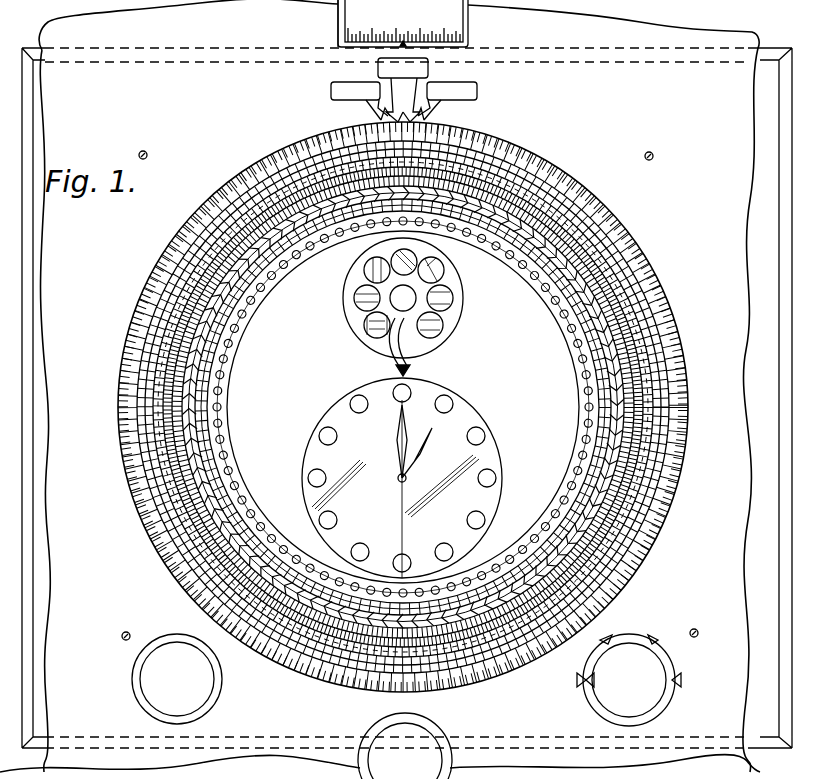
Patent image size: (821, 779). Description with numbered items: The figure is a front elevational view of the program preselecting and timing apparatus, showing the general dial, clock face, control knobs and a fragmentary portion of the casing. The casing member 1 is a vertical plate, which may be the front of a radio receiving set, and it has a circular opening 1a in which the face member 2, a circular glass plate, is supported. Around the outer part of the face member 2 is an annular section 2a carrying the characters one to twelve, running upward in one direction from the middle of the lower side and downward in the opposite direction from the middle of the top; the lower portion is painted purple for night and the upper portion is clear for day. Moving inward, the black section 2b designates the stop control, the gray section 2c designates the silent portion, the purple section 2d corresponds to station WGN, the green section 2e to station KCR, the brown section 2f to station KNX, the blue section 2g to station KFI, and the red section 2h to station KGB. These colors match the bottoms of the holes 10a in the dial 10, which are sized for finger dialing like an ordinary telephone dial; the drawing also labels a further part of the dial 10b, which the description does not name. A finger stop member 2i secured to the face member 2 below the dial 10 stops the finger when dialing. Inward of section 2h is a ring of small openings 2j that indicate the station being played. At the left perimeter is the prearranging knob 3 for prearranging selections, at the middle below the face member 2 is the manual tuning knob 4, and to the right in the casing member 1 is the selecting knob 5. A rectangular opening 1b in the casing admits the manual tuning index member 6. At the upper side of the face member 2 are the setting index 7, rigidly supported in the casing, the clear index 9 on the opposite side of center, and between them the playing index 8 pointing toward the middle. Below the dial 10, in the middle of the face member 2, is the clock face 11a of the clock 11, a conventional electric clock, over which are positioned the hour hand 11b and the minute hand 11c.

The casing member 1 is at (396, 386).
The circular opening 1a is at (647, 265).
The rectangular opening 1b is at (338, 14).
The face member 2 is at (365, 578).
The annular section 2a is at (655, 294).
The black painted section 2b is at (660, 316).
The gray painted section 2c is at (665, 350).
The purple painted section 2d is at (668, 389).
The green painted section 2e is at (632, 430).
The brown painted section 2f is at (624, 447).
The blue painted section 2g is at (612, 466).
The red painted section 2h is at (590, 480).
The finger stop member 2i is at (394, 366).
The small openings 2j is at (576, 506).
The prearranging knob 3 is at (195, 695).
The manual tuning knob 4 is at (440, 740).
The selecting knob 5 is at (650, 668).
The manual tuning index member 6 is at (466, 26).
The setting index 7 is at (331, 91).
The playing index 8 is at (428, 68).
The clear index 9 is at (477, 88).
The dial 10 is at (452, 322).
The holes 10a is at (425, 343).
The CLEAR selector button 10b is at (416, 300).
The clock 11 is at (470, 494).
The clock face 11a is at (478, 462).
The hour hand 11b is at (416, 458).
The minute hand 11c is at (398, 446).